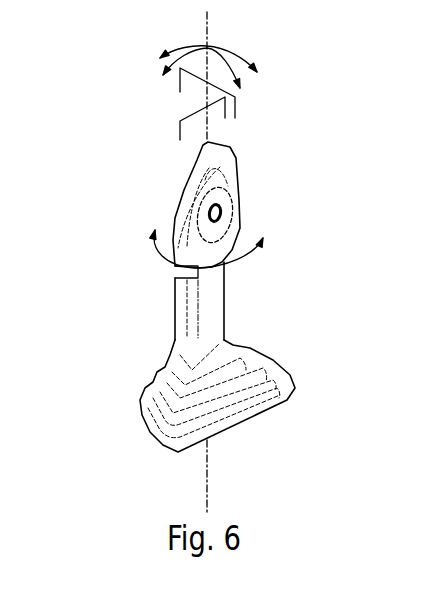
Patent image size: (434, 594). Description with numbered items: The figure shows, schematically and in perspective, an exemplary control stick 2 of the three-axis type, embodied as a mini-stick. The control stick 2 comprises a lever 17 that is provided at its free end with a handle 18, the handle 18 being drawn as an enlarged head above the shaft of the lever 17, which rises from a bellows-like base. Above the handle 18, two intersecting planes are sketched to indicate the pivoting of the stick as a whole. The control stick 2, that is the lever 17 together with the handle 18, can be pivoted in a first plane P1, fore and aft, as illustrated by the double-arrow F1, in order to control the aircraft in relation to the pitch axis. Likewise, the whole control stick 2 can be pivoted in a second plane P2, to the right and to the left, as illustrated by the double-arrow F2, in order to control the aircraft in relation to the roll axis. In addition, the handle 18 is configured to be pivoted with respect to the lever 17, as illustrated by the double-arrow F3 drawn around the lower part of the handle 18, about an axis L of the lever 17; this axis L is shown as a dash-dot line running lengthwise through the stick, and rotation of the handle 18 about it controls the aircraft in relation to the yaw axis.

The control stick 2 is at (169, 297).
The lever 17 is at (177, 307).
The handle 18 is at (180, 182).
The double-arrow F1 is at (232, 48).
The double-arrow F2 is at (183, 43).
The double-arrow F3 is at (150, 255).
The first plane P1 is at (228, 98).
The second plane P2 is at (180, 74).
The axis L is at (208, 487).